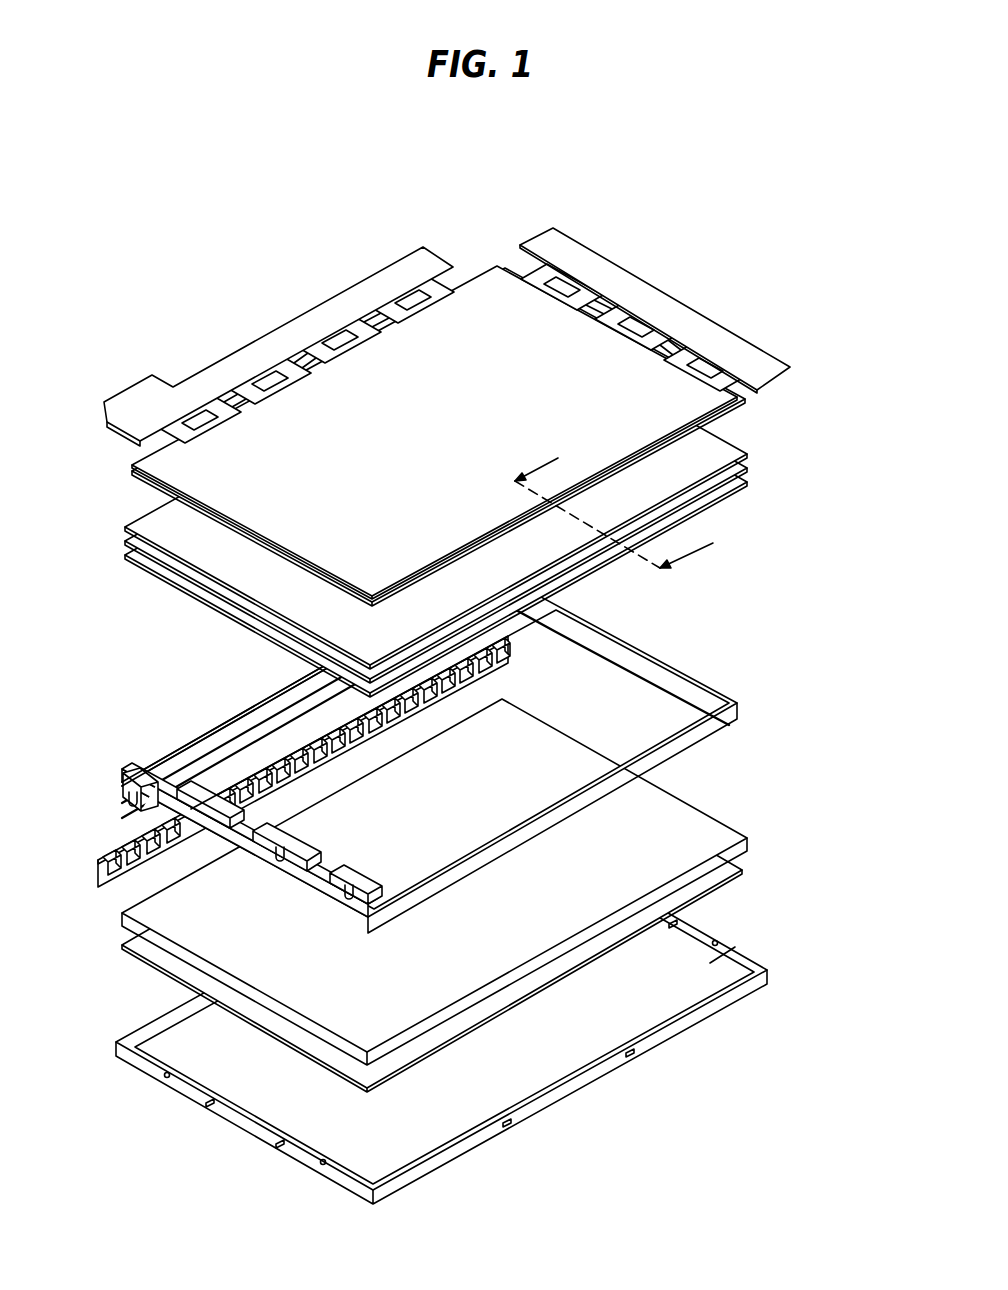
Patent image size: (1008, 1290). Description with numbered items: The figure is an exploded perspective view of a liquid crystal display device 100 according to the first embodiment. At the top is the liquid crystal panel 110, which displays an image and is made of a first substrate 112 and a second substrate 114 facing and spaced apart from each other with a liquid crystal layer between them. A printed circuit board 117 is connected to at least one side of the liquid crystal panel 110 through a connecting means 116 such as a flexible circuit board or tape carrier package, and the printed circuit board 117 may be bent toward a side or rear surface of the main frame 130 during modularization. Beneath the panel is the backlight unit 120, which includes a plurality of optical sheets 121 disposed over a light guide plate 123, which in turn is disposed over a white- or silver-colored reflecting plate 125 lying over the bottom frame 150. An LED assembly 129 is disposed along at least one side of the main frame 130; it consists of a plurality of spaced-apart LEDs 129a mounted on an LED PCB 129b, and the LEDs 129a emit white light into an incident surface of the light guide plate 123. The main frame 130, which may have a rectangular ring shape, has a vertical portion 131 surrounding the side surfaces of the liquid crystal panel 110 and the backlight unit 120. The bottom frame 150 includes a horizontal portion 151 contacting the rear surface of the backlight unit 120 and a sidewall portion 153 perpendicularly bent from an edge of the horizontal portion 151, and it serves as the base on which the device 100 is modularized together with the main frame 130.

The liquid crystal display device 100 is at (437, 161).
The liquid crystal panel 110 is at (808, 392).
The first substrate 112 is at (725, 410).
The second substrate 114 is at (723, 393).
The connecting means 116 is at (543, 277).
The printed circuit board 117 is at (382, 283).
The backlight unit 120 is at (830, 880).
The optical sheets 121 is at (752, 450).
The light guide plate 123 is at (750, 843).
The reflecting plate 125 is at (742, 872).
The LED assembly 129 is at (455, 751).
The LEDs 129a is at (510, 660).
The LED PCB 129b is at (512, 638).
The main frame 130 is at (183, 742).
The vertical portion 131 is at (157, 771).
The bottom frame 150 is at (845, 940).
The horizontal portion 151 is at (733, 955).
The sidewall portion 153 is at (743, 993).